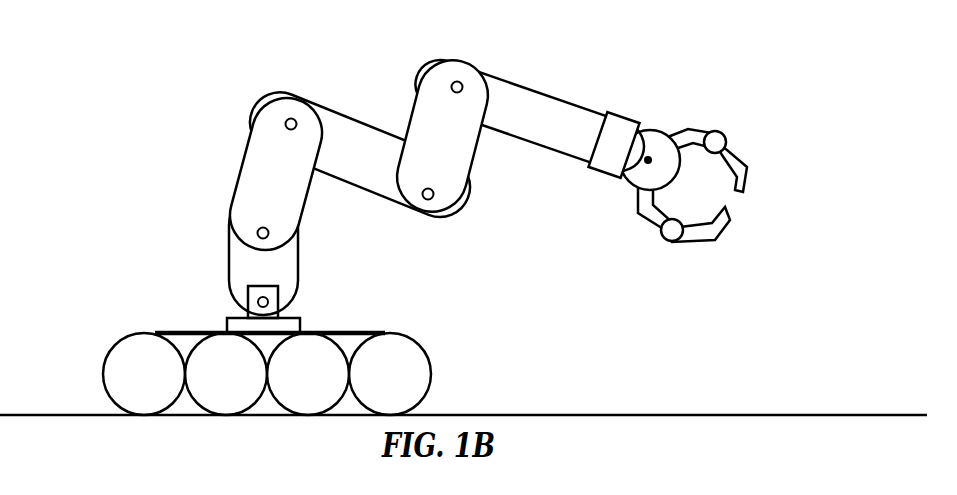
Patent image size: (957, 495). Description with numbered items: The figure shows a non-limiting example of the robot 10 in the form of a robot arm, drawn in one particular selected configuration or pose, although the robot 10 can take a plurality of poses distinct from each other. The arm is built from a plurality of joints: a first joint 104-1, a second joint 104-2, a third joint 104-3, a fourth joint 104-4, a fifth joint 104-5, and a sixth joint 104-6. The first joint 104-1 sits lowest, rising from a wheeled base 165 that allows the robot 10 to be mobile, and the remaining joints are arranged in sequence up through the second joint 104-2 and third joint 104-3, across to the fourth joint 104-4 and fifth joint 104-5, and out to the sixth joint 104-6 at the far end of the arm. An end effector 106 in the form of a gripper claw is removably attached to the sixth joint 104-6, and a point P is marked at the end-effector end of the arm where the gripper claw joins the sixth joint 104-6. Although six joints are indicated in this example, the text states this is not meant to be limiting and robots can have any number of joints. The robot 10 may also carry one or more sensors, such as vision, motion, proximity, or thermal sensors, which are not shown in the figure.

The robot 10 is at (68, 94).
The first joint 104-1 is at (247, 302).
The second joint 104-2 is at (257, 232).
The third joint 104-3 is at (289, 118).
The fourth joint 104-4 is at (430, 200).
The fifth joint 104-5 is at (455, 81).
The sixth joint 104-6 is at (622, 112).
The end effector reference point P is at (652, 155).
The end effector 106 is at (748, 78).
The wheeled base 165 is at (345, 330).